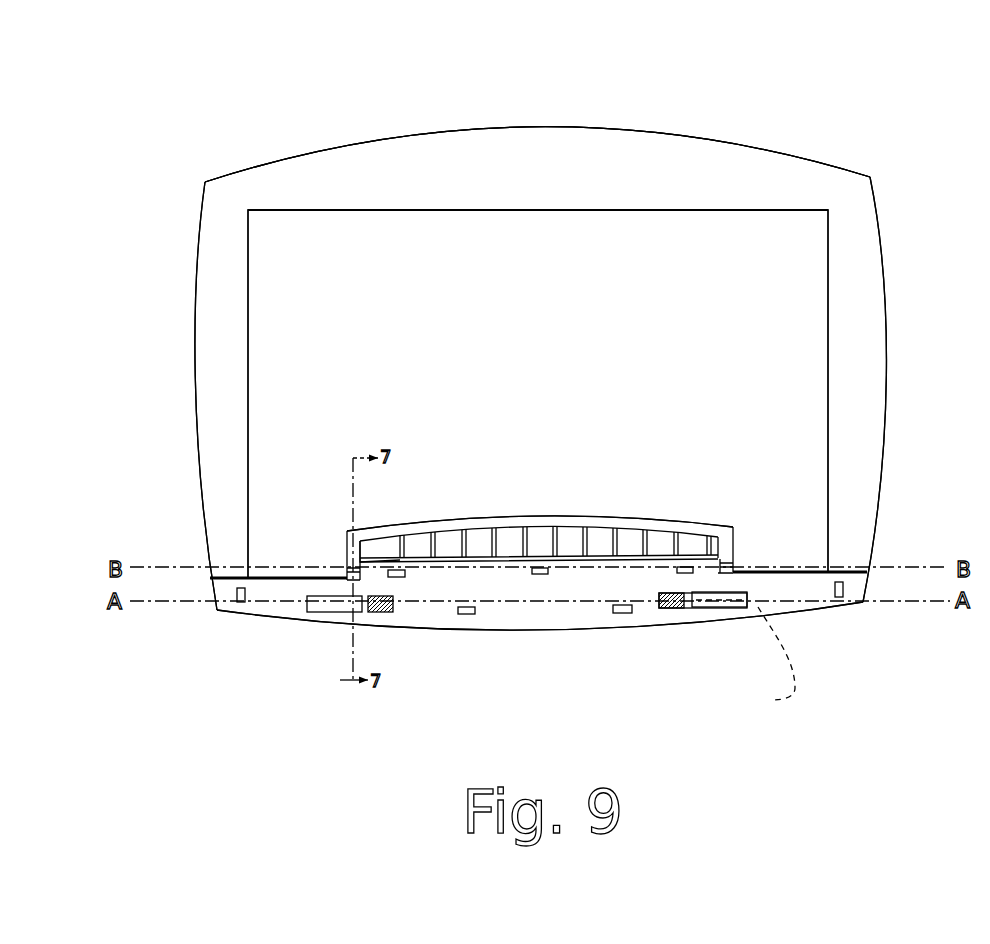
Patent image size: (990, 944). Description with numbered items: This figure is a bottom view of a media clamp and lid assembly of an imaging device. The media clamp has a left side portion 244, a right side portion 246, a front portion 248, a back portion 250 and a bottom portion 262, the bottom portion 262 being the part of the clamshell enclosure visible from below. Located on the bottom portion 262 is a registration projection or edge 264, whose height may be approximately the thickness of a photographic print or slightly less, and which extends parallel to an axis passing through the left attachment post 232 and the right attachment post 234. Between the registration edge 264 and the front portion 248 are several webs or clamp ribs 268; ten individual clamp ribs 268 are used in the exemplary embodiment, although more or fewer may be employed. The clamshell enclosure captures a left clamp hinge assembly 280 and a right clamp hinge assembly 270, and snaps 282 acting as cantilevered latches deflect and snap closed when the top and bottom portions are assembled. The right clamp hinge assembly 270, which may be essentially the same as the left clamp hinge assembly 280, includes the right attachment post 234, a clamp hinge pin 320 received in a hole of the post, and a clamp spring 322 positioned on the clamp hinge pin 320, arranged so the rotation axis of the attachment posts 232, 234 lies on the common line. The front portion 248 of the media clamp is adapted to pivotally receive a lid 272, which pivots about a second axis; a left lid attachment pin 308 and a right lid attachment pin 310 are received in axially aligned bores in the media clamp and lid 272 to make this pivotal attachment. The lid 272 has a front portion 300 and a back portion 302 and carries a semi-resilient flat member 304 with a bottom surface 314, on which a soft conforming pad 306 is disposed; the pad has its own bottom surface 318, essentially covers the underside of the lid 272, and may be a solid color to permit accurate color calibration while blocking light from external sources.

The front portion 300 is at (636, 130).
The lid 272 is at (296, 148).
The semi-resilient flat member 304 is at (352, 187).
The soft conforming pad 306 is at (724, 283).
The bottom surface 314 is at (588, 187).
The bottom surface 318 is at (532, 317).
The back portion 302 is at (540, 496).
The clamp ribs 268 is at (610, 545).
The front portion 248 is at (668, 530).
The registration edge 264 is at (378, 550).
The left lid attachment pin 308 is at (348, 549).
The right lid attachment pin 310 is at (739, 560).
The bottom portion 262 is at (543, 612).
The back portion 250 is at (565, 630).
The snaps 282 is at (240, 603).
The left attachment post 232 is at (325, 613).
The left clamp hinge assembly 280 is at (365, 616).
The right clamp hinge assembly 270 is at (688, 616).
The right attachment post 234 is at (718, 612).
The clamp spring 322 is at (669, 614).
The clamp hinge pin 320 is at (761, 659).
The left side portion 244 is at (210, 594).
The right side portion 246 is at (867, 585).